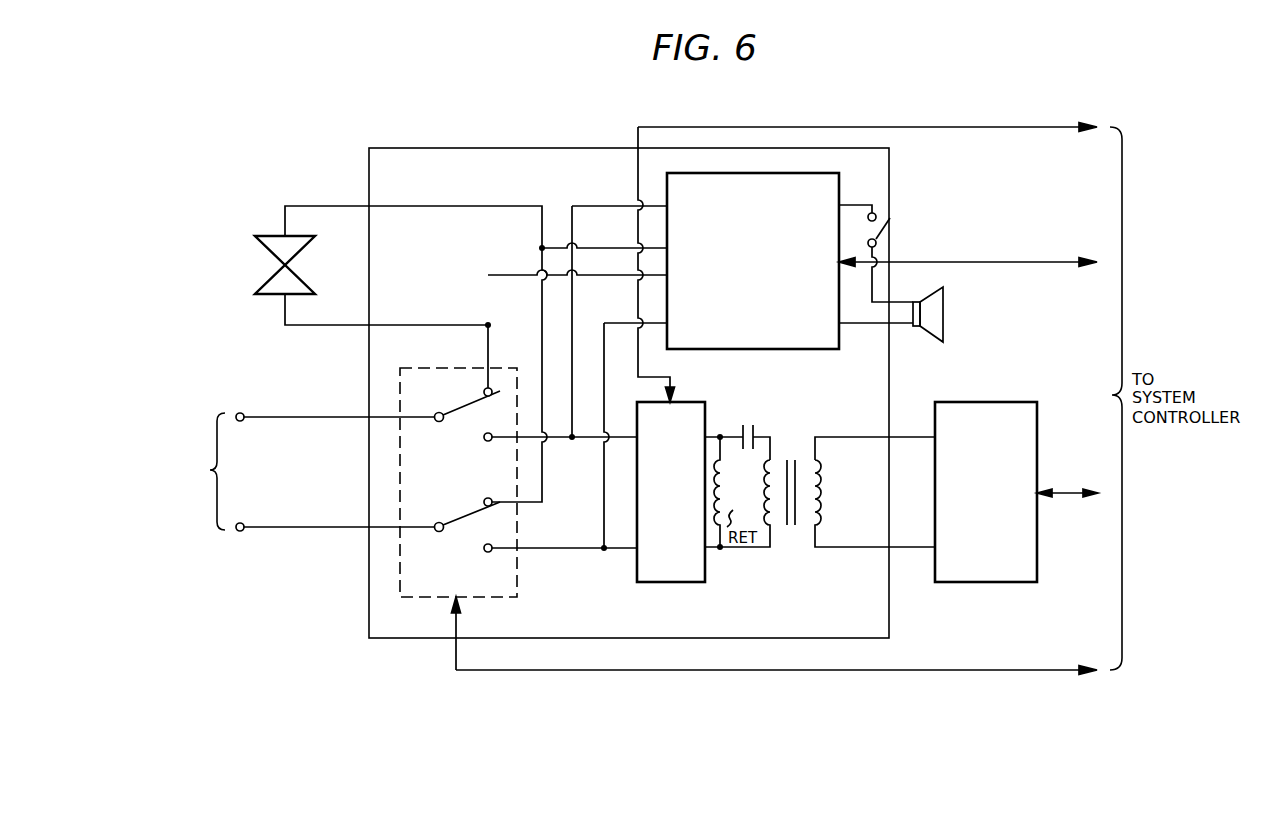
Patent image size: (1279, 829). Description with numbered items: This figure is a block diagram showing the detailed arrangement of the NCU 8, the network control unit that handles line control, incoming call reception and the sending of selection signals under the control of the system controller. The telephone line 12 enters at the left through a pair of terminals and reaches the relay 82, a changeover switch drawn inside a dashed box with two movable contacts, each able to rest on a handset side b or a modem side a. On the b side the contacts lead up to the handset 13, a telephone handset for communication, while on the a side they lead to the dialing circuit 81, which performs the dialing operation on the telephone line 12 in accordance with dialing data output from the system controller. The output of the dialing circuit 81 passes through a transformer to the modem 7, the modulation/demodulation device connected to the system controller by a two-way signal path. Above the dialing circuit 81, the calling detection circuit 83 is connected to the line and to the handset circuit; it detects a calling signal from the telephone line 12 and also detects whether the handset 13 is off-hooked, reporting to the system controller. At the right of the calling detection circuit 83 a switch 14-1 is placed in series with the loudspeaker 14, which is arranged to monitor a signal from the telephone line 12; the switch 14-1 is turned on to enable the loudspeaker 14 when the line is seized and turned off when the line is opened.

The NCU (network control unit) 8 is at (890, 168).
The handset 13 is at (262, 233).
The telephone line 12 is at (180, 445).
The relay 82 is at (517, 575).
The dialing circuit 81 is at (690, 402).
The calling detection circuit 83 is at (817, 352).
The modem 7 is at (982, 401).
The loudspeaker 14 is at (943, 315).
The switch 14-1 is at (879, 236).